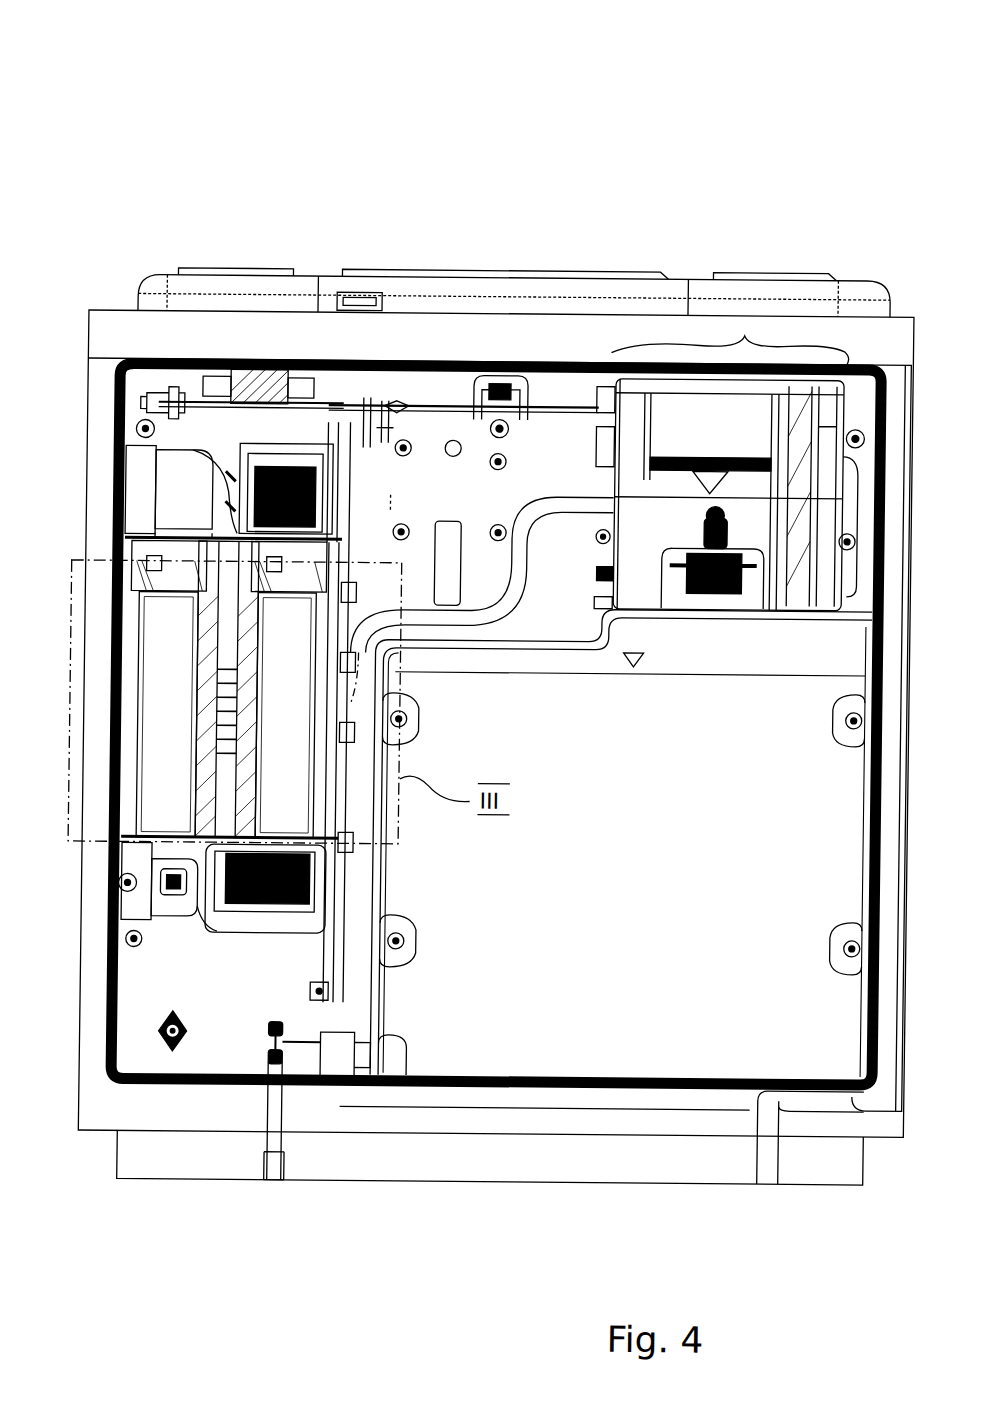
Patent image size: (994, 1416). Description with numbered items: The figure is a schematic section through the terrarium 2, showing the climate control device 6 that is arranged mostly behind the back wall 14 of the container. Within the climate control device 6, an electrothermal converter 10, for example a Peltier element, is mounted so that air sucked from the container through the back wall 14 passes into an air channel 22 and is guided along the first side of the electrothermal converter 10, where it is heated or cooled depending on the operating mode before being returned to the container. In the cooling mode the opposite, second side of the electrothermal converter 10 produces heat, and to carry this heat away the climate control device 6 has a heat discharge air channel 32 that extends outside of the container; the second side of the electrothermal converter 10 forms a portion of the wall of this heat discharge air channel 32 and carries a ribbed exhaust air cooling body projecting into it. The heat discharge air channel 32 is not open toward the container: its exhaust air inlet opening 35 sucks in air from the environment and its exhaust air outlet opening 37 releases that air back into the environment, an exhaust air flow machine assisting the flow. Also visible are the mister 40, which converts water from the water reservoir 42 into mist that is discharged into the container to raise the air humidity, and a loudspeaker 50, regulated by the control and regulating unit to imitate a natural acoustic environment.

The terrarium 2 is at (407, 139).
The climate control device 6 is at (129, 330).
The electrothermal converter 10 is at (230, 704).
The back wall 14 is at (98, 1021).
The air channel 22 is at (306, 635).
The heat discharge air channel 32 is at (186, 632).
The exhaust air inlet opening 35 is at (110, 880).
The exhaust air outlet opening 37 is at (109, 467).
The mister 40 is at (738, 317).
The water reservoir 42 is at (680, 893).
The loudspeaker 50 is at (256, 358).